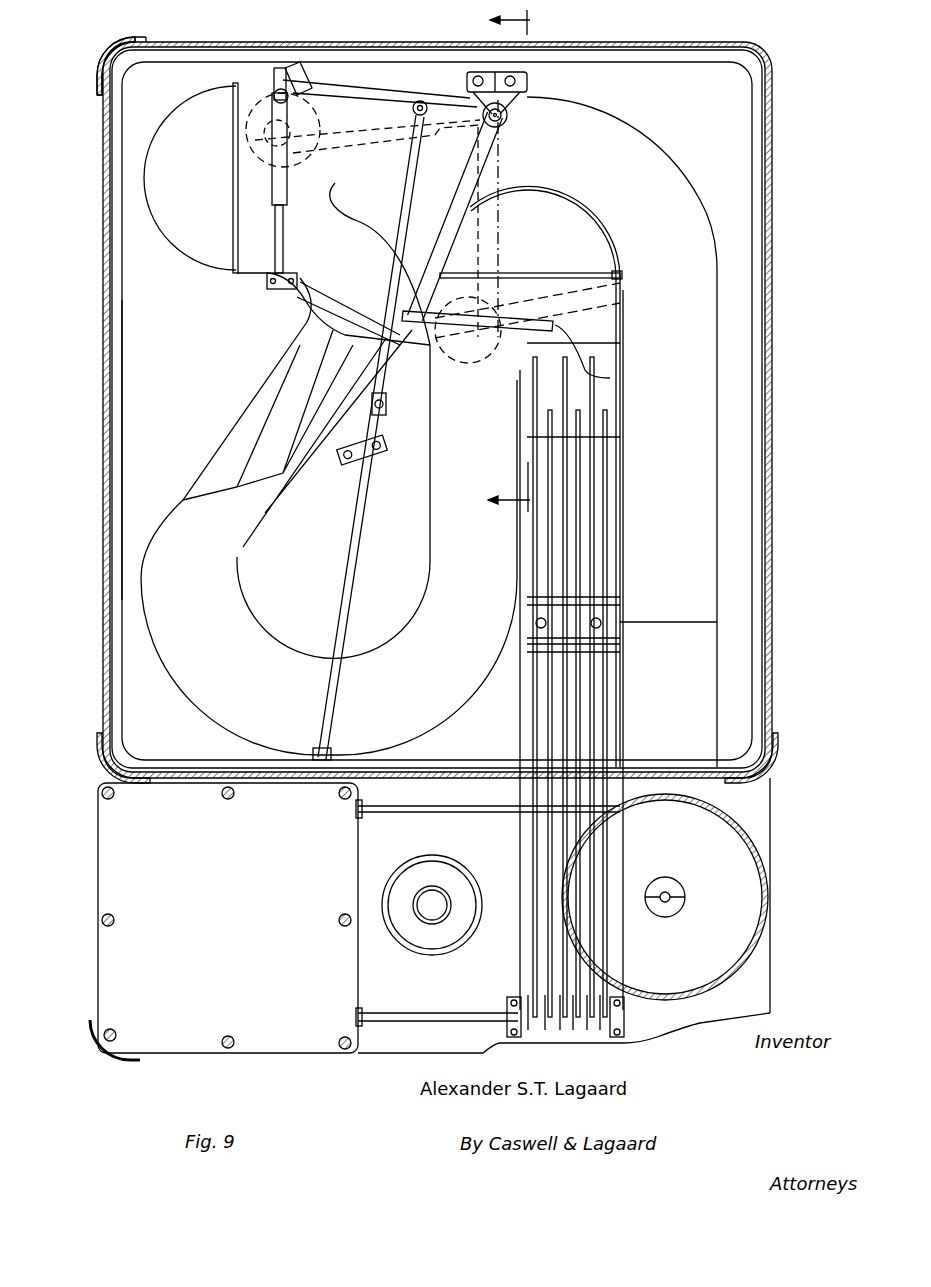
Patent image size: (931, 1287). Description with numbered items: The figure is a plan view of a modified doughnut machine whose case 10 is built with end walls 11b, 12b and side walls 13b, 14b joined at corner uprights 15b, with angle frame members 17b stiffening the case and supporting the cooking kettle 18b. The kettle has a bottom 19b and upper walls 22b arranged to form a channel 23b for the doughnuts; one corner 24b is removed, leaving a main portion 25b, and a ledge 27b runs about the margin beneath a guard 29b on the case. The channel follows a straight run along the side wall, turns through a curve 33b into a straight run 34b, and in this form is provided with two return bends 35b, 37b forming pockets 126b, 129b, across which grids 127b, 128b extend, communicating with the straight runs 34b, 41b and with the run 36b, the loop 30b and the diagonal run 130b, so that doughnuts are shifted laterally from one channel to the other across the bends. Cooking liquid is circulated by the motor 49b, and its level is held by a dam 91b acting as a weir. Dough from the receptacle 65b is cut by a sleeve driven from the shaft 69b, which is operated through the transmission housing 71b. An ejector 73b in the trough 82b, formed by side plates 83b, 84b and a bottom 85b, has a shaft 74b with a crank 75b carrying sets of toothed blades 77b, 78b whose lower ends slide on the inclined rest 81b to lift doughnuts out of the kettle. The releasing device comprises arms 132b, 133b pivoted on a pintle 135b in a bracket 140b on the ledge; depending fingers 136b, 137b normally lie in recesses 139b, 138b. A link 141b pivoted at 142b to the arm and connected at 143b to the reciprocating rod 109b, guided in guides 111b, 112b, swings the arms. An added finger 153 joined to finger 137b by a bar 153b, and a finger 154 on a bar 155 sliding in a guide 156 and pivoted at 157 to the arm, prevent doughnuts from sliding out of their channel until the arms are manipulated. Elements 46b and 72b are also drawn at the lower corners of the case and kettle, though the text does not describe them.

The case 10 is at (489, 262).
The end wall 11b is at (674, 48).
The end wall 12b is at (372, 1056).
The side wall 13b is at (774, 385).
The side wall 14b is at (112, 458).
The upright 15b is at (118, 44).
The angle frame member 17b is at (612, 680).
The cooking kettle 18b is at (141, 584).
The bottom 19b is at (187, 662).
The upper walls 22b is at (125, 335).
The channel 23b is at (370, 672).
The removed corner 24b is at (186, 770).
The main portion 25b is at (752, 467).
The ledge 27b is at (756, 305).
The guard 29b is at (118, 381).
The loop 30b is at (265, 680).
The curve 33b is at (678, 205).
The straight run 34b is at (530, 104).
The return bend 35b is at (165, 240).
The straight run 36b is at (170, 205).
The return bend 37b is at (548, 203).
The straight run 41b is at (610, 330).
The corner piece 46b is at (98, 760).
The motor 49b is at (405, 933).
The receptacle 65b is at (740, 848).
The shaft 69b is at (468, 812).
The transmission housing 71b is at (125, 882).
The wedge plate 72b is at (258, 430).
The ejector 73b is at (588, 500).
The shaft 74b is at (386, 1012).
The crank 75b is at (528, 1000).
The toothed blades 77b is at (610, 432).
The toothed blades 78b is at (560, 442).
The inclined rest 81b is at (610, 360).
The trough 82b is at (520, 700).
The side plate 83b is at (520, 726).
The side plate 84b is at (612, 738).
The bottom 85b is at (612, 754).
The dam 91b is at (583, 605).
The reciprocating rod 109b is at (357, 565).
The guide 111b is at (318, 750).
The guide 112b is at (352, 466).
The pocket 126b is at (206, 240).
The grid 127b is at (240, 146).
The grid 128b is at (618, 272).
The pocket 129b is at (582, 237).
The diagonal run 130b is at (432, 478).
The arm 132b is at (392, 100).
The arm 133b is at (480, 160).
The pintle 135b is at (508, 119).
The depending finger 136b is at (280, 68).
The depending finger 137b is at (450, 290).
The recess 138b is at (383, 368).
The recess 139b is at (305, 92).
The bracket 140b is at (470, 95).
The link 141b is at (383, 248).
The pivot 142b is at (412, 120).
The connection 143b is at (388, 403).
The finger 153 is at (612, 378).
The bar 153b is at (458, 330).
The finger 154 is at (290, 200).
The bar 155 is at (297, 270).
The guide 156 is at (268, 312).
The pivot 157 is at (275, 103).